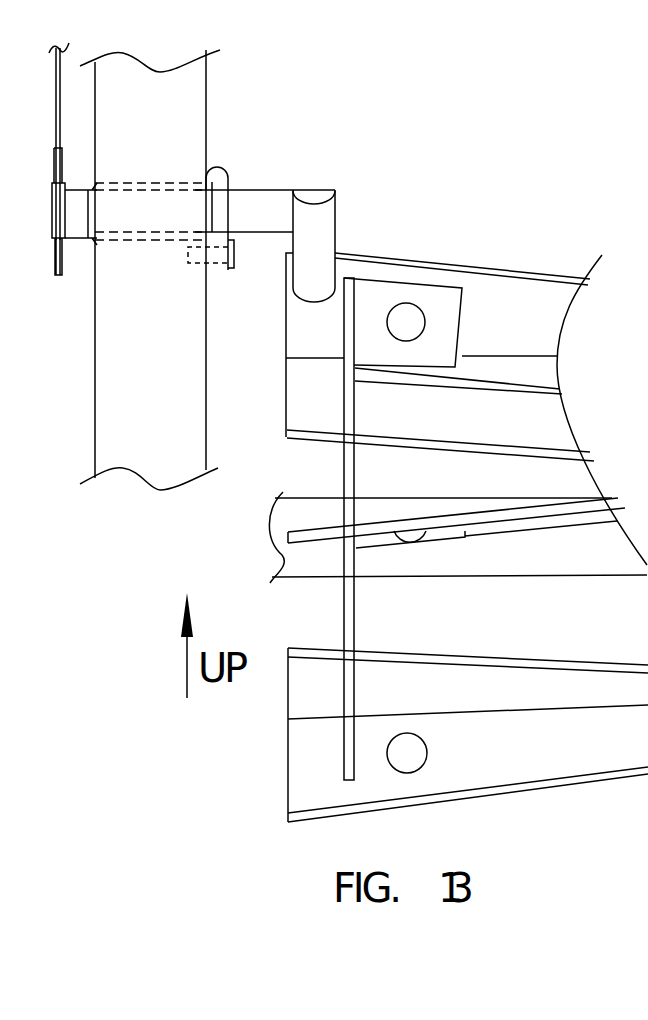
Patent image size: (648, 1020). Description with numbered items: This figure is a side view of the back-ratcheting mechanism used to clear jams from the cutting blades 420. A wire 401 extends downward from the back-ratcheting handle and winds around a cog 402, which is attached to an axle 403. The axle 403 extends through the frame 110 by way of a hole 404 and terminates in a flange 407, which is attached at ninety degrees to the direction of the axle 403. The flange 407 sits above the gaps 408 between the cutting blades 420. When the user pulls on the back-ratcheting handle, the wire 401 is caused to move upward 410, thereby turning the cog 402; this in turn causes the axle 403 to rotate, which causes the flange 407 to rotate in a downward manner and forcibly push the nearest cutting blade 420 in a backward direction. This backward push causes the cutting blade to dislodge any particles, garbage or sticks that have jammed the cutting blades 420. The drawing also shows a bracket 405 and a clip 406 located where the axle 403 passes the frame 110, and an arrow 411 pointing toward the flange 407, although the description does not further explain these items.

The panel 110 is at (106, 356).
The rod 401 is at (53, 77).
The rod end 402 is at (51, 267).
The bolt head 403 is at (75, 208).
The bolt shank (hidden) 404 is at (128, 211).
The bracket 405 is at (226, 170).
The clip 406 is at (238, 264).
The pin 407 is at (323, 212).
The frame 408 is at (508, 320).
The mounting assembly 410 is at (296, 66).
The pin axis direction 411 is at (356, 218).
The support plate 420 is at (316, 360).